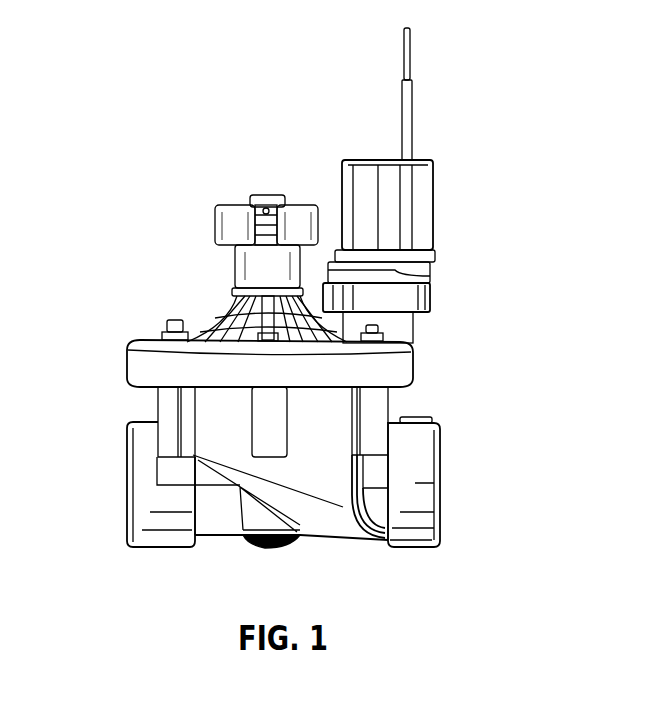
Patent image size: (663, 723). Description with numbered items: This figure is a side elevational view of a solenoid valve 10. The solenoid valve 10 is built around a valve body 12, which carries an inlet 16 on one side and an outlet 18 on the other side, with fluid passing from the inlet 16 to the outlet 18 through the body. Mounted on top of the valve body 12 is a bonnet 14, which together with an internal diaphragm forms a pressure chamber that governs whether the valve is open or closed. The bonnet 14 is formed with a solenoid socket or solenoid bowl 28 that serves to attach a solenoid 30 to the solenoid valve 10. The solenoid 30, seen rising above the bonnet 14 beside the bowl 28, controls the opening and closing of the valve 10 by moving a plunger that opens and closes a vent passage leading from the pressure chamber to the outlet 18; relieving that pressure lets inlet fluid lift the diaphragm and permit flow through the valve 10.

The solenoid valve 10 is at (151, 52).
The valve body 12 is at (343, 490).
The bonnet 14 is at (127, 365).
The inlet 16 is at (142, 505).
The outlet 18 is at (425, 488).
The solenoid bowl 28 is at (413, 330).
The solenoid 30 is at (425, 193).